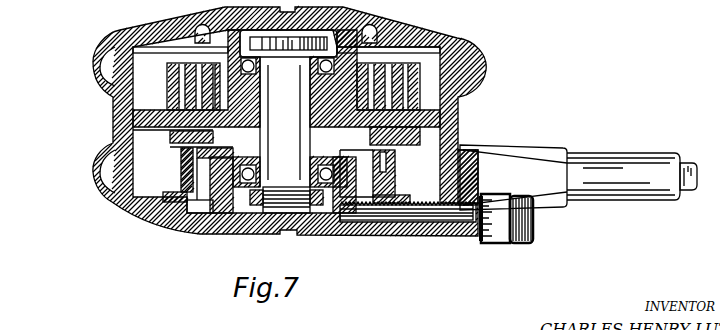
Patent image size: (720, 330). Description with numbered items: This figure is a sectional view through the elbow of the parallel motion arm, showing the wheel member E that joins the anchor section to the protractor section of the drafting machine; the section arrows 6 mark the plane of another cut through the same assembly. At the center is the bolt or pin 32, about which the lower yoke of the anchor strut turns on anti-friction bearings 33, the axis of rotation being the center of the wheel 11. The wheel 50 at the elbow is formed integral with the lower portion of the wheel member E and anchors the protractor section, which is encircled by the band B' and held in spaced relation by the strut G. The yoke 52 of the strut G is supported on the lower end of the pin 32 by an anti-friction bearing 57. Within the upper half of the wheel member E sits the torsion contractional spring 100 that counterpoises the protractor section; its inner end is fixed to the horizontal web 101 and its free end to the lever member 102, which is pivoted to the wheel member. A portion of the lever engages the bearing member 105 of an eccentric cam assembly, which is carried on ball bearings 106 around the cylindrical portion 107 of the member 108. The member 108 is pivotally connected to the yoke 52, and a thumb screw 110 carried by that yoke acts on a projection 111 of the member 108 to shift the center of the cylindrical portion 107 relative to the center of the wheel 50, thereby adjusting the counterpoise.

The section line 6- 6 is at (97, 52).
The wheel 11 is at (446, 70).
The bolt or pin 32 is at (287, 113).
The anti-friction bearings 33 is at (320, 66).
The wheel 50 is at (128, 192).
The yoke 52 is at (200, 222).
The anti-friction bearing 57 is at (260, 175).
The torsion contractional spring 100 is at (168, 86).
The horizontal web 101 is at (155, 116).
The lever member 102 is at (172, 136).
The bearing member 105 is at (181, 152).
The ball bearings 106 is at (181, 168).
The cylindrical portion 107 is at (390, 178).
The member 108 is at (173, 197).
The thumb screw 110 is at (508, 244).
The projection 111 is at (407, 222).
The wheel member E is at (115, 122).
The strut G is at (632, 162).
The band B' is at (688, 195).